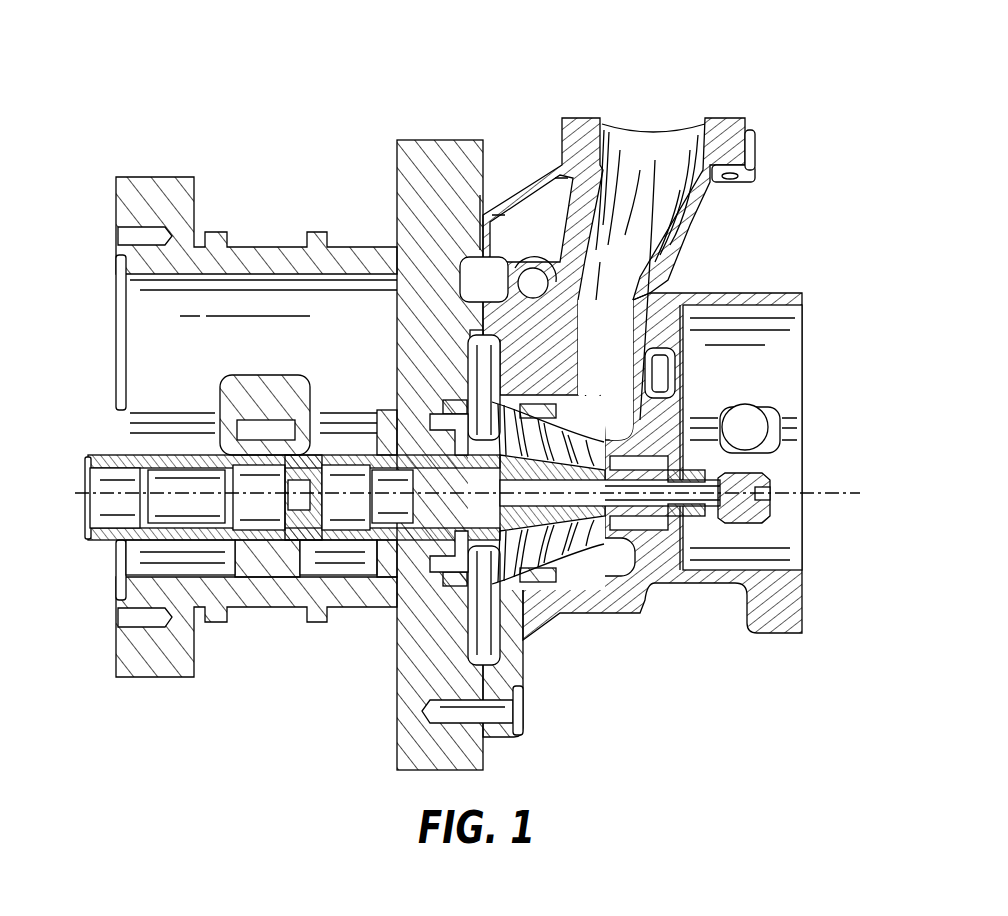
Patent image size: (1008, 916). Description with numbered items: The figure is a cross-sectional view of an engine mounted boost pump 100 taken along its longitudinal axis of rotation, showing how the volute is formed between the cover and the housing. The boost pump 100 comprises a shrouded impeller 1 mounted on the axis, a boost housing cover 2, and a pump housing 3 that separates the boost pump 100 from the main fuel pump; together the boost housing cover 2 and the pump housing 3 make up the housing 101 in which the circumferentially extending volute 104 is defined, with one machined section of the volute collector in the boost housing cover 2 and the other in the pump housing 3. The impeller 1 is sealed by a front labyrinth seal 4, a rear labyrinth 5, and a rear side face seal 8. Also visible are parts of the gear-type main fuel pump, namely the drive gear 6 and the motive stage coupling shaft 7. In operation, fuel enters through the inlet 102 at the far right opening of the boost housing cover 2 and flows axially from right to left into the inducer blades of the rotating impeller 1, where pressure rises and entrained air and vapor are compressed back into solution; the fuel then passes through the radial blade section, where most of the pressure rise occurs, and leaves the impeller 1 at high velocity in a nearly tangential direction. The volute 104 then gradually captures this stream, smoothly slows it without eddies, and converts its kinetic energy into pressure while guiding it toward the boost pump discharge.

The engine mounted boost pump 100 is at (565, 72).
The housing 101 is at (438, 138).
The inlet 102 is at (615, 441).
The volute 104 is at (500, 662).
The shrouded impeller 1 is at (550, 553).
The boost housing cover 2 is at (650, 570).
The pump housing 3 is at (412, 206).
The front labyrinth seal 4 is at (548, 398).
The rear labyrinth 5 is at (446, 397).
The drive gear 6 is at (267, 569).
The motive stage coupling shaft 7 is at (768, 515).
The rear side face seal 8 is at (428, 548).